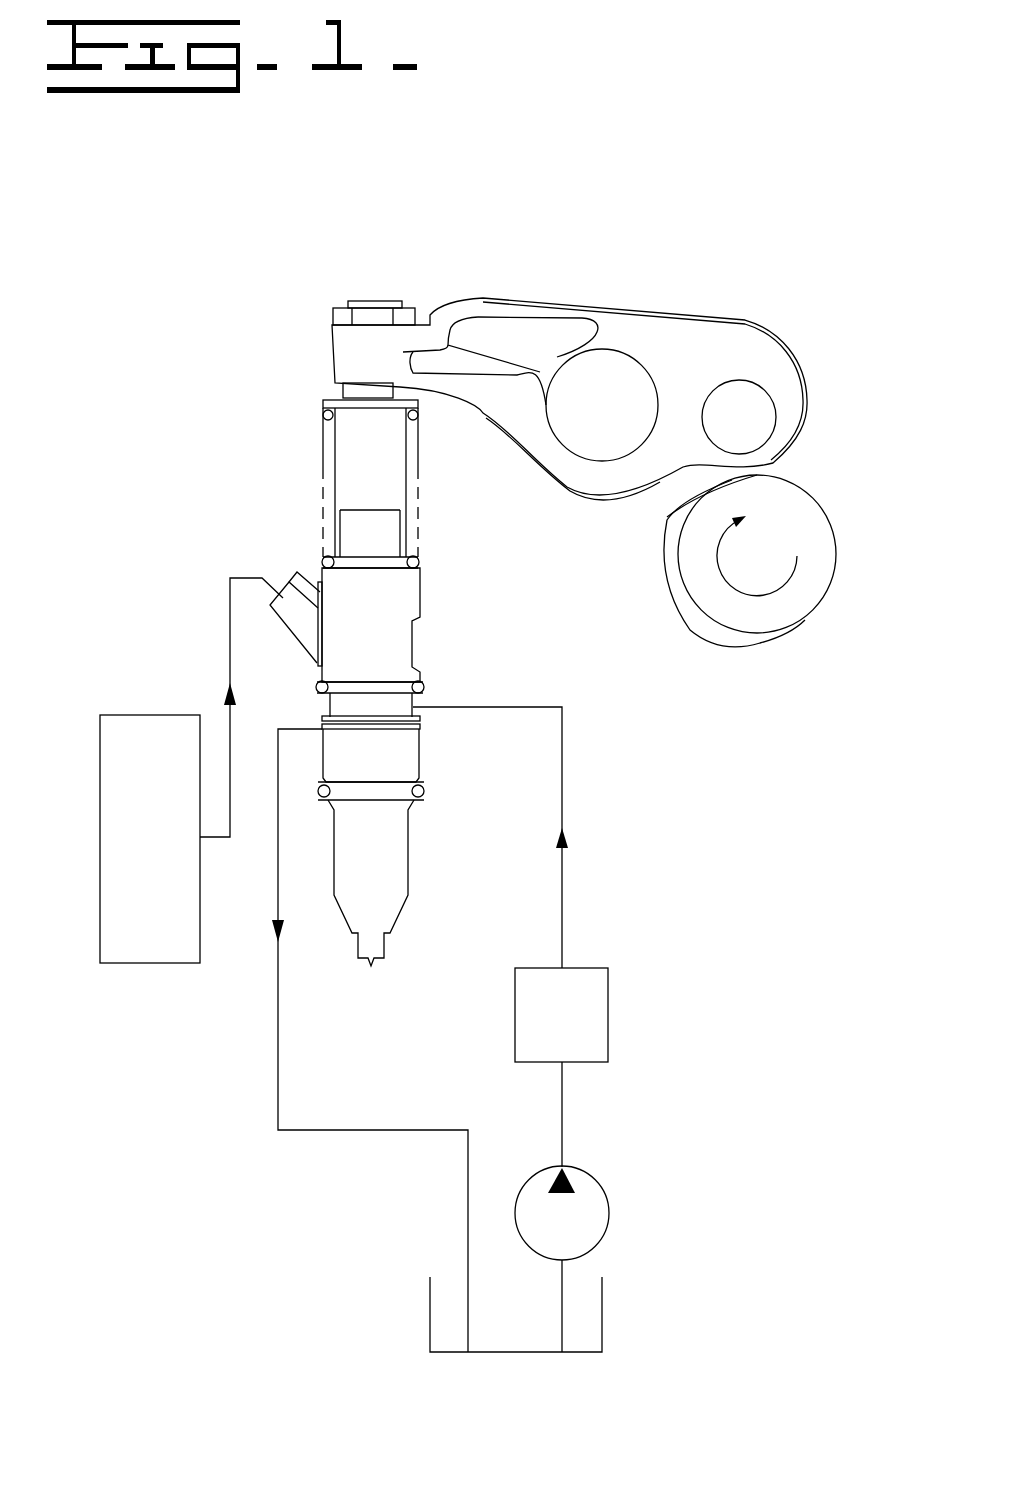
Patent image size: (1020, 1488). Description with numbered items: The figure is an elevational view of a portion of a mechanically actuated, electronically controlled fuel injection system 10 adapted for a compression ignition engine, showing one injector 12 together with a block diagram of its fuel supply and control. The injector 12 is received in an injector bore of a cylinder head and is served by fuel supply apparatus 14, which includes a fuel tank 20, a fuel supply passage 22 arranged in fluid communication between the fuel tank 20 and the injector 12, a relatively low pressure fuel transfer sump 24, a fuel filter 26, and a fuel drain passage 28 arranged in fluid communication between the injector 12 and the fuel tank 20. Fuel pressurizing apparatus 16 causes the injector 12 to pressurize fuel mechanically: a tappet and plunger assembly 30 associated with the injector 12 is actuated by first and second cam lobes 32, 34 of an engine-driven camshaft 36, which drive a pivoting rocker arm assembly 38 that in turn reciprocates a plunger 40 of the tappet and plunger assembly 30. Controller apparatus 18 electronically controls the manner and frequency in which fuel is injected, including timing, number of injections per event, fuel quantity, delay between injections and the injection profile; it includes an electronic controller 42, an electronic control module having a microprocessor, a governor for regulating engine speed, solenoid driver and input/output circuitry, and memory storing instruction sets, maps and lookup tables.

The fuel injection system 10 is at (302, 238).
The injector 12 is at (288, 493).
The fuel supply apparatus 14 is at (668, 1068).
The fuel pressurizing apparatus 16 is at (785, 310).
The controller apparatus 18 is at (122, 705).
The fuel tank 20 is at (602, 1310).
The fuel supply passage 22 is at (567, 795).
The fuel transfer sump 24 is at (609, 1210).
The fuel filter 26 is at (608, 1005).
The fuel drain passage 28 is at (278, 1018).
The tappet and plunger assembly 30 is at (295, 388).
The first cam lobe 32 is at (667, 517).
The second cam lobe 34 is at (665, 605).
The camshaft 36 is at (837, 565).
The rocker arm assembly 38 is at (592, 303).
The plunger 40 is at (322, 402).
The electronic controller 42 is at (134, 817).